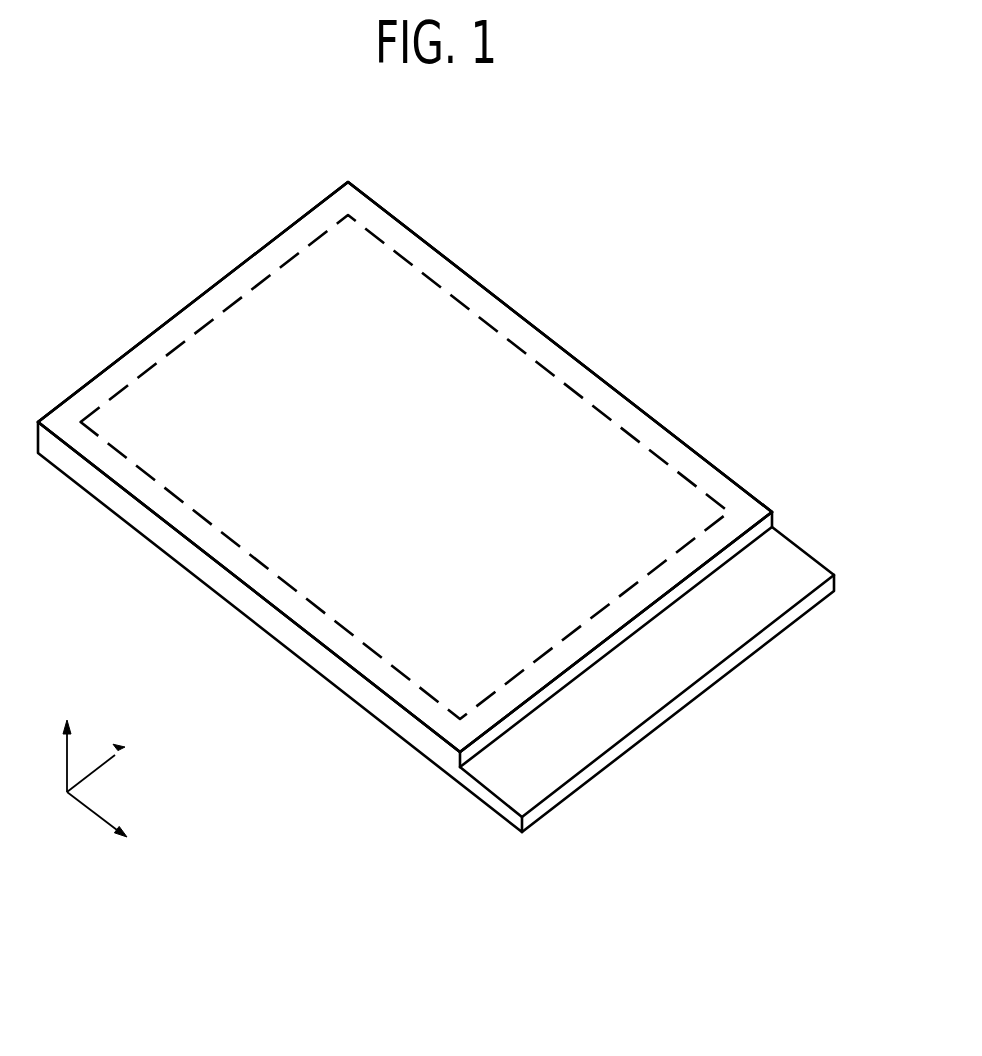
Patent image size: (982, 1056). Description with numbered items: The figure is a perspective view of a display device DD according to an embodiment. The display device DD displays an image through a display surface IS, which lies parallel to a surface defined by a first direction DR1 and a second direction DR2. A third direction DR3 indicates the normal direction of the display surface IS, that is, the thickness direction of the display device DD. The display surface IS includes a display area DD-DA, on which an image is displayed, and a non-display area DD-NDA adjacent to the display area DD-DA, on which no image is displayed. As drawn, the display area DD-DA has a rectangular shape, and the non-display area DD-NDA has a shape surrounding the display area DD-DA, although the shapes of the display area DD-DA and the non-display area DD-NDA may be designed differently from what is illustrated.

The display device DD is at (600, 238).
The display surface IS is at (219, 180).
The display area DD-DA is at (267, 331).
The non-display area DD-NDA is at (172, 333).
The first direction DR1 is at (117, 827).
The second direction DR2 is at (120, 761).
The third direction DR3 is at (67, 736).